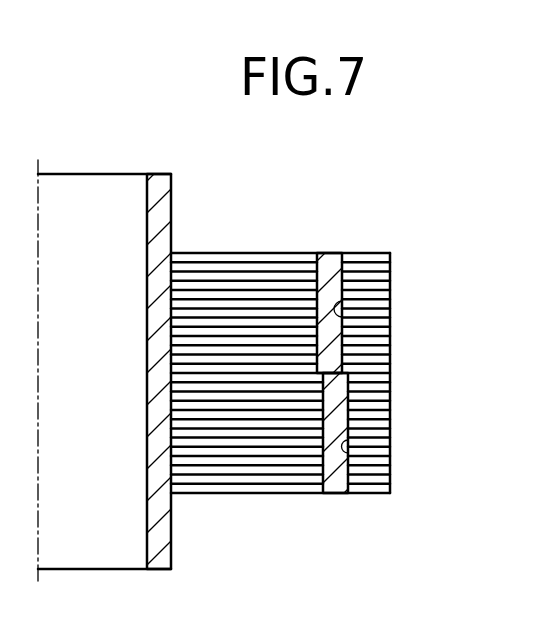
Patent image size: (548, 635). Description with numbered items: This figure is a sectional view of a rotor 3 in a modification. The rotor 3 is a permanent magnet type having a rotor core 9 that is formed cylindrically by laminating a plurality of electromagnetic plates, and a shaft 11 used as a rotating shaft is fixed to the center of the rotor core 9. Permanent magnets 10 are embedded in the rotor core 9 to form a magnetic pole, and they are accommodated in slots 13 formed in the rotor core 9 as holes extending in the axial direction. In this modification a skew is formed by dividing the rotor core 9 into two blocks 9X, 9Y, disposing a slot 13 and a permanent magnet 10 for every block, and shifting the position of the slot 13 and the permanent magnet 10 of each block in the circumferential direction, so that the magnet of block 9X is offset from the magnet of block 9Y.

The rotor 3 is at (331, 339).
The rotor core 9 is at (331, 373).
The block 9X is at (390, 346).
The block 9Y is at (311, 437).
The permanent magnet 10 is at (332, 267).
The shaft 11 is at (153, 553).
The slot 13 is at (342, 301).